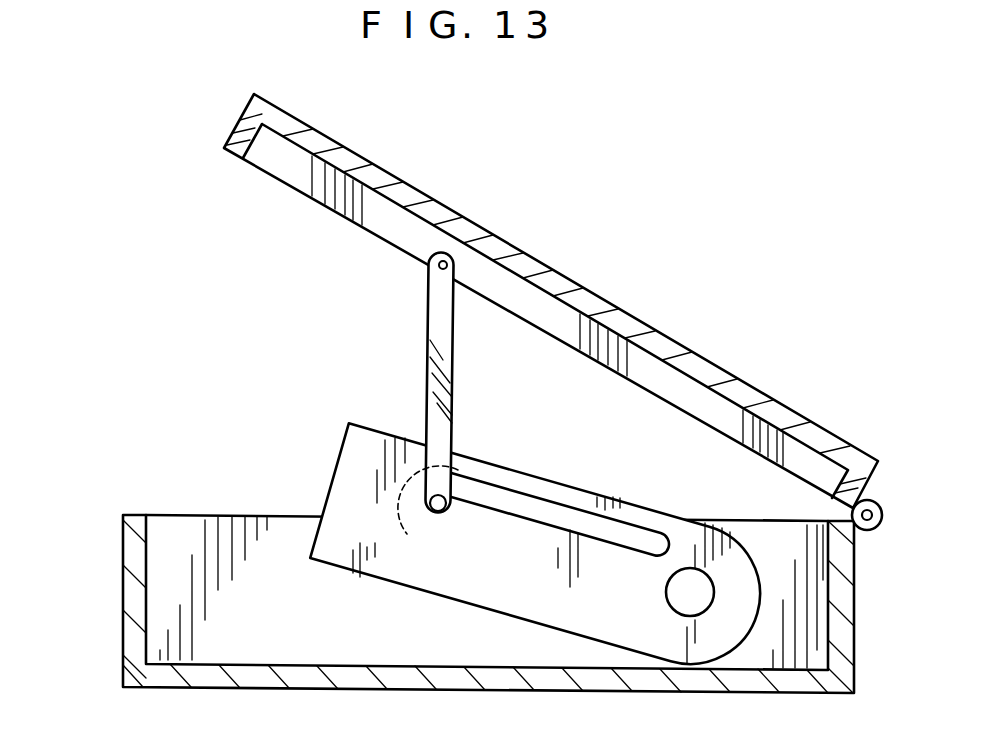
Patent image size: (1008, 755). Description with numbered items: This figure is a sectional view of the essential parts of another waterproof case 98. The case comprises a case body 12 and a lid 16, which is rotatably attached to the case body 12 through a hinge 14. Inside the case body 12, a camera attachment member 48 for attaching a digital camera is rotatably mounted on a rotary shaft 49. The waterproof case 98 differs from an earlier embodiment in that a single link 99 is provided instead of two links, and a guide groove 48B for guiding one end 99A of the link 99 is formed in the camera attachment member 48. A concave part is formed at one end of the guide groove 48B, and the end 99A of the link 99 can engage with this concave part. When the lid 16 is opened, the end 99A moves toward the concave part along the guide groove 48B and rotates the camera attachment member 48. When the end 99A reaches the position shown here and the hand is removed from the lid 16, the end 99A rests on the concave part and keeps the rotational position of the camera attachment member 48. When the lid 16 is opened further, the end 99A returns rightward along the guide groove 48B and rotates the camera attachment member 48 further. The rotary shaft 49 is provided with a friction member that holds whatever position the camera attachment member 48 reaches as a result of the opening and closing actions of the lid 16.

The waterproof case 98 is at (686, 120).
The lid 16 is at (382, 153).
The case body 12 is at (104, 601).
The hinge 14 is at (884, 511).
The camera attachment member 48 is at (492, 612).
The guide groove 48B is at (538, 498).
The rotary shaft 49 is at (683, 602).
The link 99 is at (427, 347).
The end of the link 99A is at (395, 507).